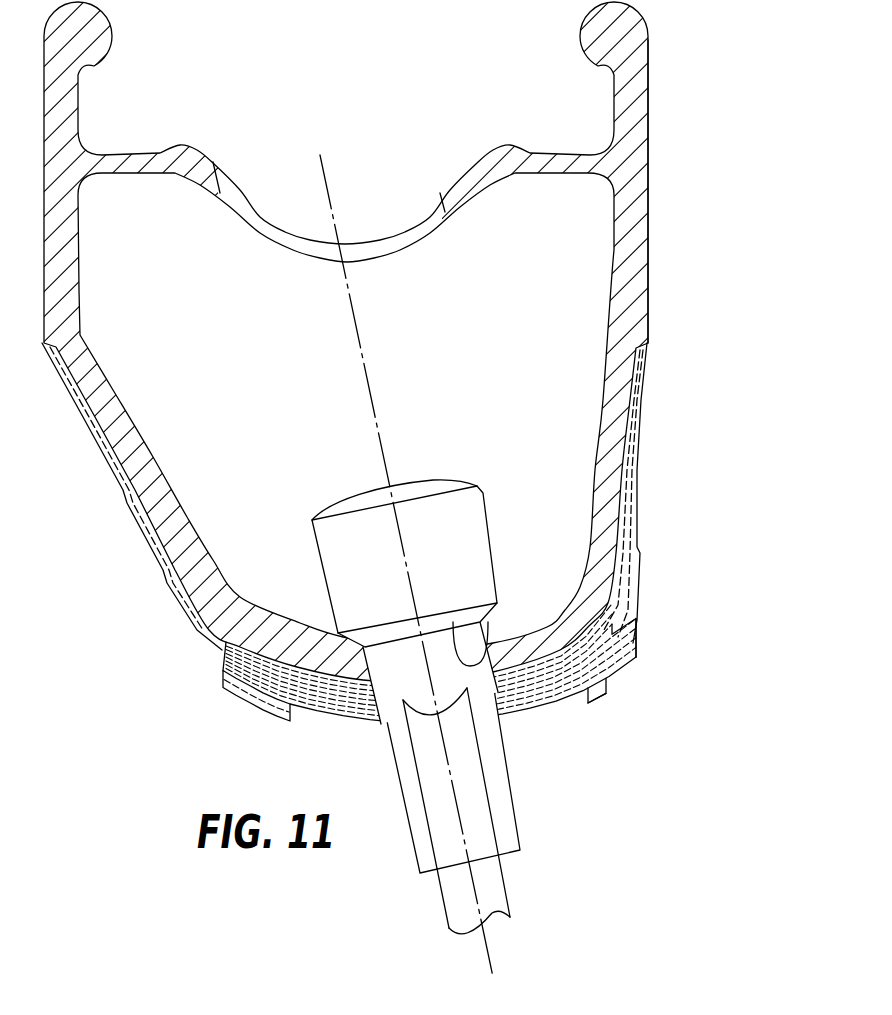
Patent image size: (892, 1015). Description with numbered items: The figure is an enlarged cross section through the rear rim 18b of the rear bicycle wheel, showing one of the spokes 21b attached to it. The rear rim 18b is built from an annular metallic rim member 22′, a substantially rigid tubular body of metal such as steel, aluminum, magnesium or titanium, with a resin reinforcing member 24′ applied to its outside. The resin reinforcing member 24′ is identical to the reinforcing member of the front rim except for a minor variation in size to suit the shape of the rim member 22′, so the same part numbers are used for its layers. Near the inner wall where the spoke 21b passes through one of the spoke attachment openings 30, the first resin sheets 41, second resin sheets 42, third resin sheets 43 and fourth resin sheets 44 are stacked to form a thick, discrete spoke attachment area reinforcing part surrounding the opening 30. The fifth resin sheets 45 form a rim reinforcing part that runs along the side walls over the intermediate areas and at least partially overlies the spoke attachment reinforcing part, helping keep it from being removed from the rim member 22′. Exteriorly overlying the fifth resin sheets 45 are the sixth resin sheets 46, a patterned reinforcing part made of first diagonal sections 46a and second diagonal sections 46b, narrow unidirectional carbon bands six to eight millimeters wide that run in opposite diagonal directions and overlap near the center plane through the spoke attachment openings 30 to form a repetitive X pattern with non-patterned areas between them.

The annular rim 18b is at (727, 87).
The annular metallic rim member 22′ is at (660, 112).
The resin reinforcing member 24′ is at (670, 383).
The fifth resin sheets 45 is at (92, 432).
The first resin sheets 41 is at (270, 657).
The third resin sheets 43 is at (298, 680).
The second resin sheets 42 is at (553, 673).
The fourth resin sheets 44 is at (315, 703).
The sixth resin sheets 46 is at (600, 757).
The first diagonal sections 46a is at (640, 672).
The second diagonal sections 46b is at (610, 698).
The spoke attachment openings 30 is at (455, 630).
The spokes 21b is at (506, 893).